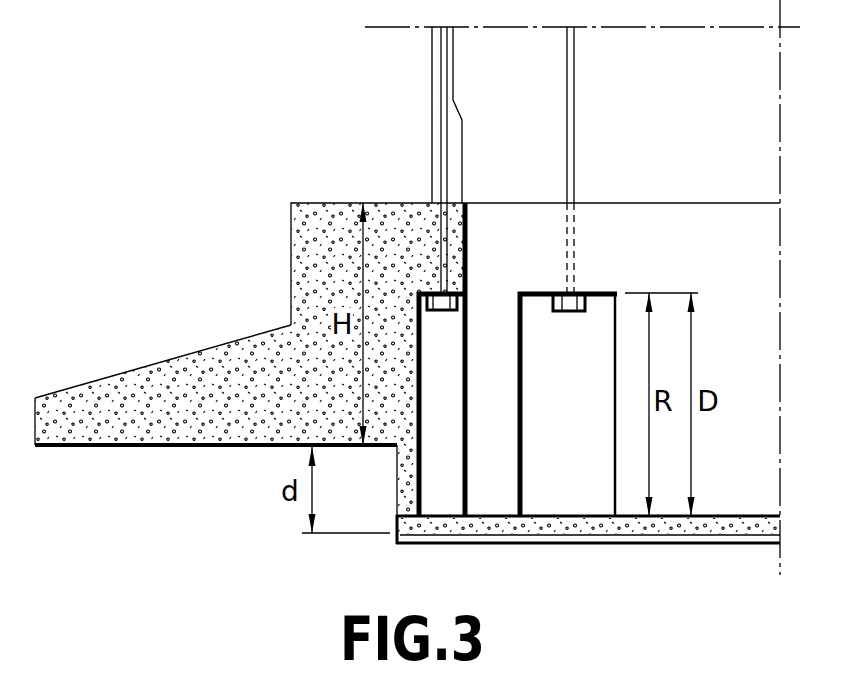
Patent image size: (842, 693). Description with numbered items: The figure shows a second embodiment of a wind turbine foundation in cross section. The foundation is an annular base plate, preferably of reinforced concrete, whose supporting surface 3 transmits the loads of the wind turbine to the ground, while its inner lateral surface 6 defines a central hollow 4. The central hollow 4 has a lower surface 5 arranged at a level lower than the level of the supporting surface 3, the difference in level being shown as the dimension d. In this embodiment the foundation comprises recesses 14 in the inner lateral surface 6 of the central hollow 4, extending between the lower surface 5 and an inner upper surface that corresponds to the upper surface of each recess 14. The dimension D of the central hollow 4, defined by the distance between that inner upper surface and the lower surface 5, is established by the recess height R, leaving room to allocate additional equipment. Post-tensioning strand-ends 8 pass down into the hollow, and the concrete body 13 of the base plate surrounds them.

The supporting surface 3 is at (177, 447).
The central hollow 4 is at (756, 344).
The lower surface 5 is at (594, 527).
The inner lateral surface 6 is at (417, 388).
The post-tensioning strand-end 8 is at (572, 132).
The concrete block 13 is at (340, 200).
The recesses 14 is at (447, 403).